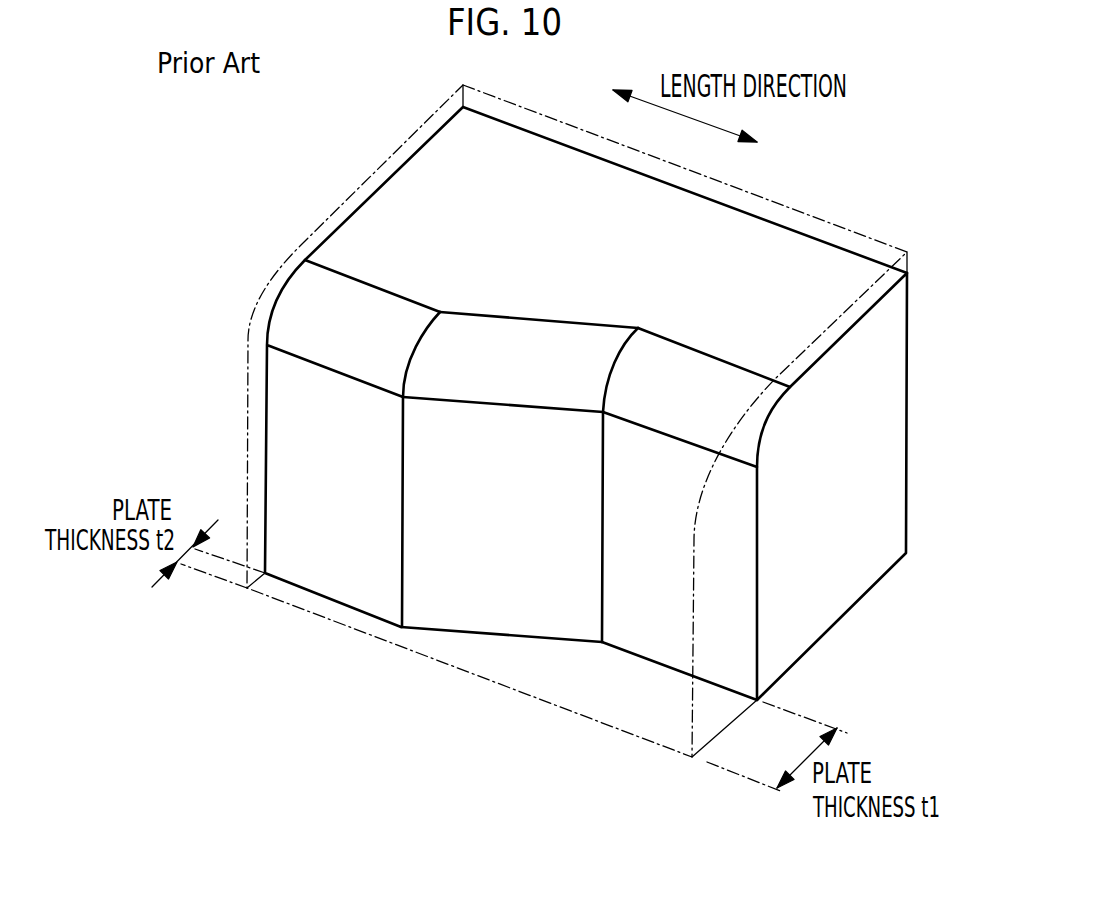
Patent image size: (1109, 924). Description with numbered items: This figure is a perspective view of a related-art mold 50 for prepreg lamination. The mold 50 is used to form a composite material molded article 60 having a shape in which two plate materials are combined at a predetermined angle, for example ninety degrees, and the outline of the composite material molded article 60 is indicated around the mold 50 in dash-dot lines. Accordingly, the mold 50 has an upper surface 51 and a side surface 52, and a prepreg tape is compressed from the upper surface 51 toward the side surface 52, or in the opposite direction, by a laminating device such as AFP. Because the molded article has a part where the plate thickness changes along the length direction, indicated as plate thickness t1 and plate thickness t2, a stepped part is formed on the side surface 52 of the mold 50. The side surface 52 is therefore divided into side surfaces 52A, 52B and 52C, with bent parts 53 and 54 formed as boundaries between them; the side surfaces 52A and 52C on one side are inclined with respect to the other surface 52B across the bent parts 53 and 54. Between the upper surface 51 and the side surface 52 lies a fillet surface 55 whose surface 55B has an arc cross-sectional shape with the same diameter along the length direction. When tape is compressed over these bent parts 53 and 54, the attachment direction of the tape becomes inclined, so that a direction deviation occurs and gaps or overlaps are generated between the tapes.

The mold 50 is at (878, 442).
The upper surface 51 is at (790, 240).
The side surface 52 is at (511, 542).
The side surface 52A is at (312, 577).
The side surface 52B is at (481, 620).
The side surface 52C is at (650, 645).
The bent part 53 is at (400, 603).
The bent part 54 is at (601, 608).
The fillet surface 55 is at (520, 391).
The surface of fillet surface 55B is at (507, 375).
The composite material molded article 60 is at (575, 127).